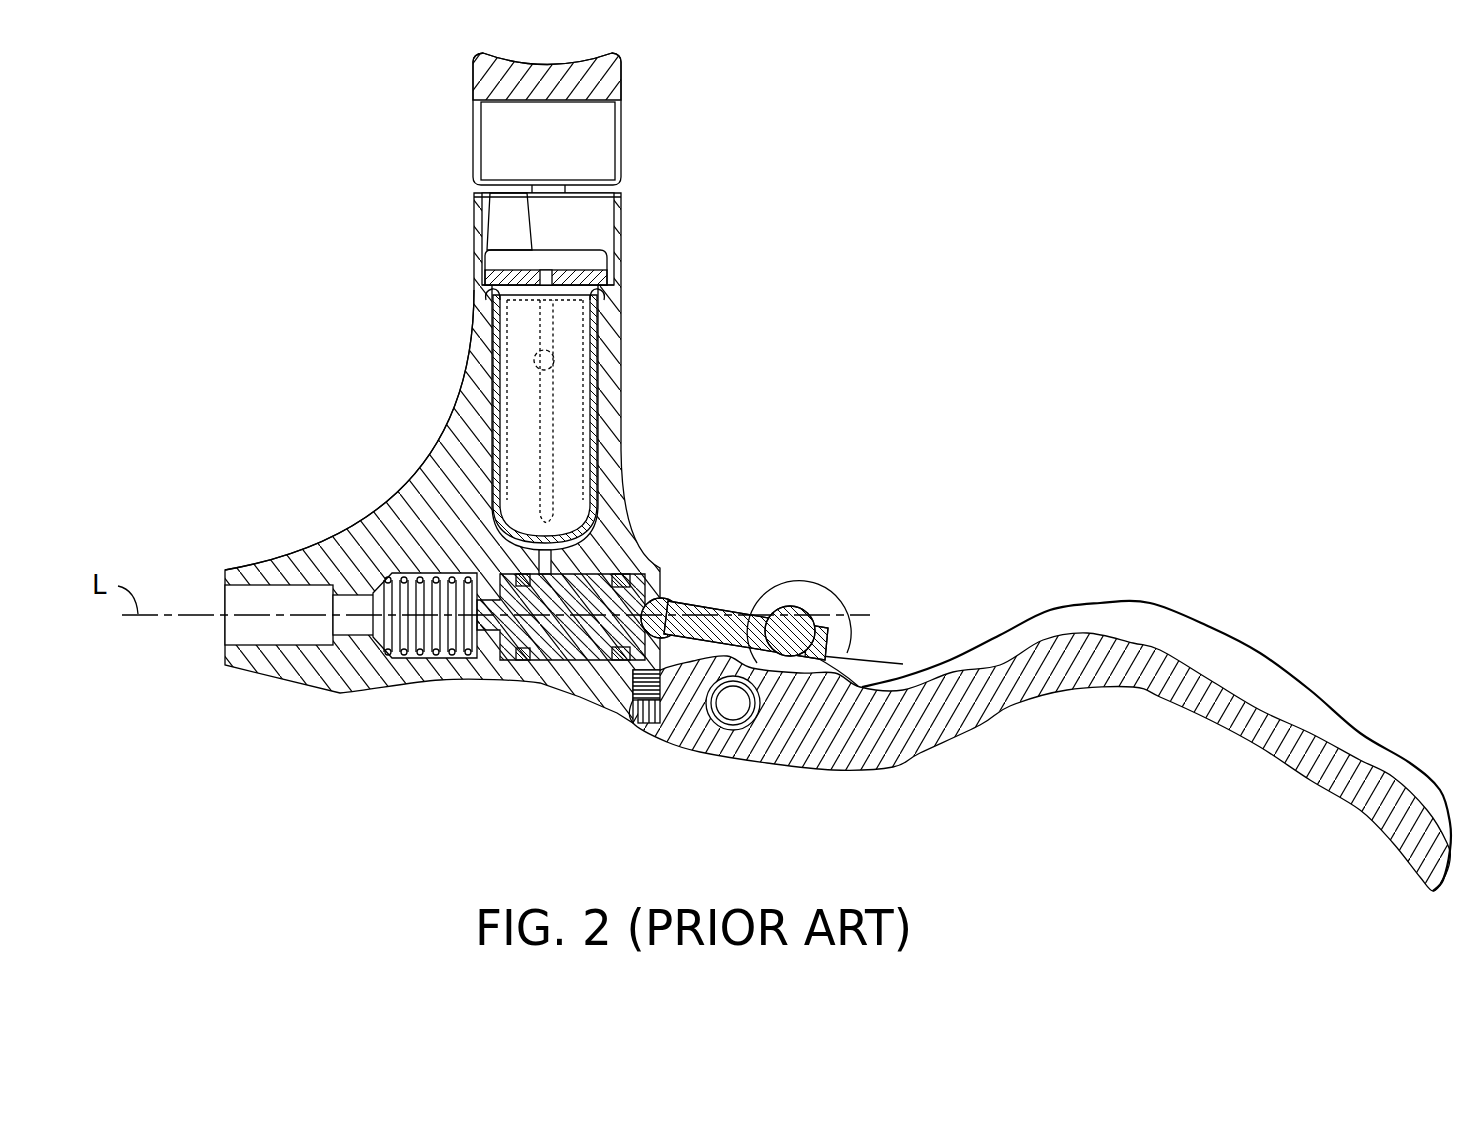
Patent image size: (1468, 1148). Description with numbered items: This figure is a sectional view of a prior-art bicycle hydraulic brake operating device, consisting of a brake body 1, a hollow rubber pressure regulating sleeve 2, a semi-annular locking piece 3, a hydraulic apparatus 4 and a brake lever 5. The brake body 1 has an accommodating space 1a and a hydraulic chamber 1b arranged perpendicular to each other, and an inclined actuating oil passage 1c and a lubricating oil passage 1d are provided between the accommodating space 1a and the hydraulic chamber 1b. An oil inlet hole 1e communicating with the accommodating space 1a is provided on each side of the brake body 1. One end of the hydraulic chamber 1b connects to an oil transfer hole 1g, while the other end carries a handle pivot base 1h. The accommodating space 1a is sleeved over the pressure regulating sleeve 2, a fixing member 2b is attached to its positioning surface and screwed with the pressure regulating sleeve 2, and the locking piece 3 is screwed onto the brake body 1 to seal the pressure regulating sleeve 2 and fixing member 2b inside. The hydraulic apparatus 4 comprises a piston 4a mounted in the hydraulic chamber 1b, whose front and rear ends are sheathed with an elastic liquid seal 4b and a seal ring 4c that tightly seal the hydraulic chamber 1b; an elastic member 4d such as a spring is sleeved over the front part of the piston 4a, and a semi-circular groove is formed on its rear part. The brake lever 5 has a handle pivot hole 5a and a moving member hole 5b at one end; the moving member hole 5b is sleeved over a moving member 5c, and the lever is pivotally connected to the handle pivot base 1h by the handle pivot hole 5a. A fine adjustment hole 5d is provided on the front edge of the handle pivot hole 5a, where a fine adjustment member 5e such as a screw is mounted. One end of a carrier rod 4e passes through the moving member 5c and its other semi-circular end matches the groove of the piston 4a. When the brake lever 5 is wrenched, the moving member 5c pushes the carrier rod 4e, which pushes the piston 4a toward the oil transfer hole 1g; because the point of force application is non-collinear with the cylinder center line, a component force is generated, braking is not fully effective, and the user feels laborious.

The brake body 1 is at (308, 538).
The accommodating space 1a is at (465, 470).
The hydraulic chamber 1b is at (442, 662).
The actuating oil passage 1c is at (400, 520).
The lubricating oil passage 1d is at (590, 525).
The oil inlet hole 1e is at (556, 356).
The oil transfer hole 1g is at (233, 626).
The handle pivot base 1h is at (736, 705).
The pressure regulating sleeve 2 is at (567, 408).
The fixing member 2b is at (520, 262).
The locking piece 3 is at (632, 102).
The hydraulic apparatus 4 is at (633, 629).
The piston 4a is at (570, 640).
The elastic liquid seal 4b is at (522, 660).
The seal ring 4c is at (622, 583).
The elastic member 4d is at (378, 655).
The carrier rod 4e is at (736, 610).
The brake lever 5 is at (1040, 746).
The handle pivot hole 5a is at (733, 703).
The moving member hole 5b is at (855, 611).
The moving member 5c is at (812, 630).
The fine adjustment hole 5d is at (685, 741).
The fine adjustment member 5e is at (651, 724).